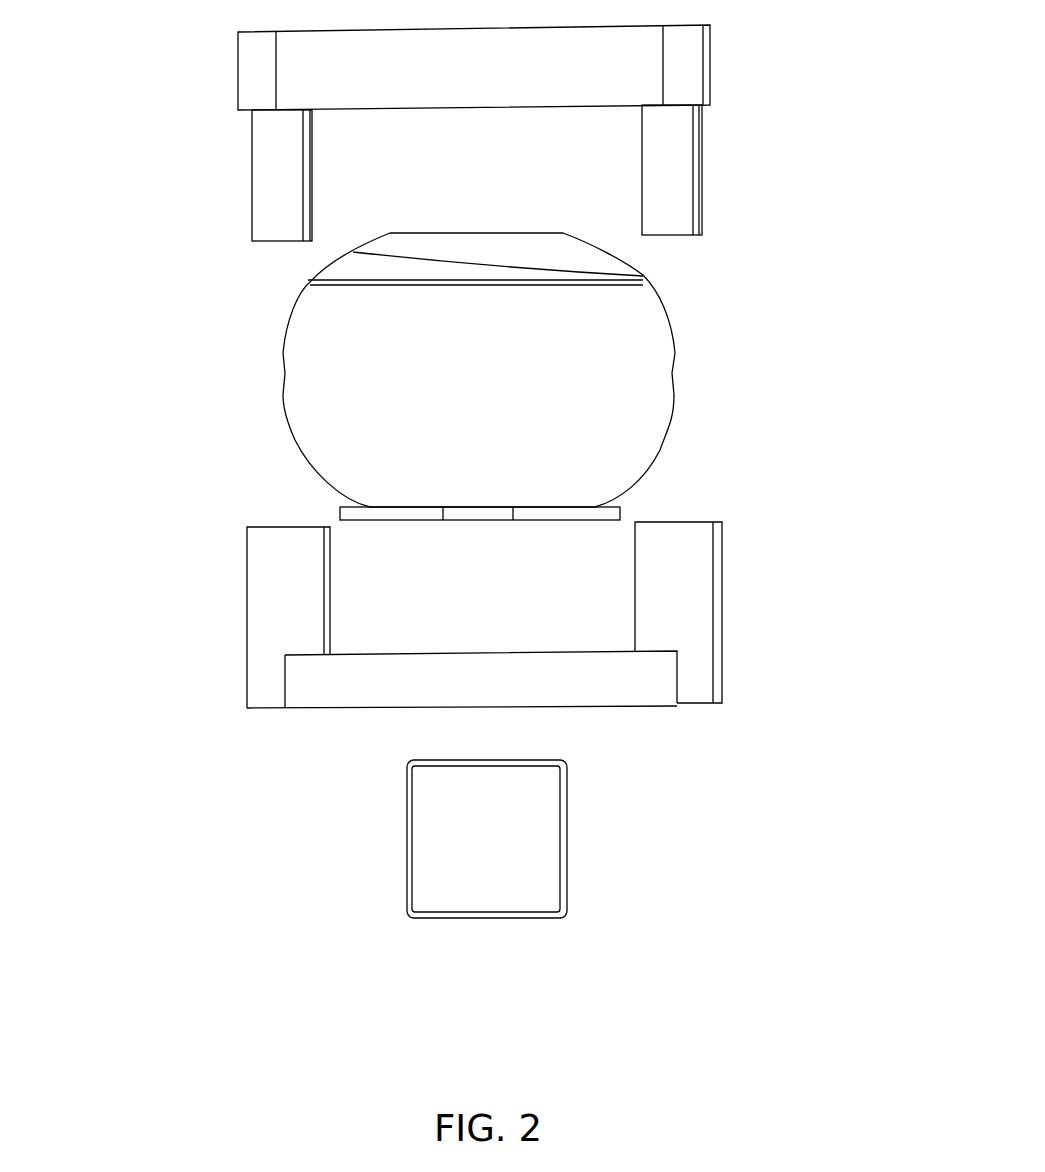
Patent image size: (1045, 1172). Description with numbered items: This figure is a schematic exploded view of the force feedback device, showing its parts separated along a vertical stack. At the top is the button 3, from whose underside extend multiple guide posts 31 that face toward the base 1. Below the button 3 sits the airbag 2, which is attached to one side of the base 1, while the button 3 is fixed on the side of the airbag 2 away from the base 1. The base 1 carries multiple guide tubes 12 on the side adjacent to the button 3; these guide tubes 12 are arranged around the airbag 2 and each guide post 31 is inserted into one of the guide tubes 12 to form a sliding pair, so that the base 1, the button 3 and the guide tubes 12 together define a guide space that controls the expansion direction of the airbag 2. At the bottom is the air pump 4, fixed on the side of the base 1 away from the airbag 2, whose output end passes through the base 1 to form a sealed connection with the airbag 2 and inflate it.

The base 1 is at (493, 601).
The guide tubes 12 is at (305, 568).
The airbag 2 is at (392, 363).
The button 3 is at (491, 126).
The guide posts 31 is at (277, 178).
The air pump 4 is at (482, 833).